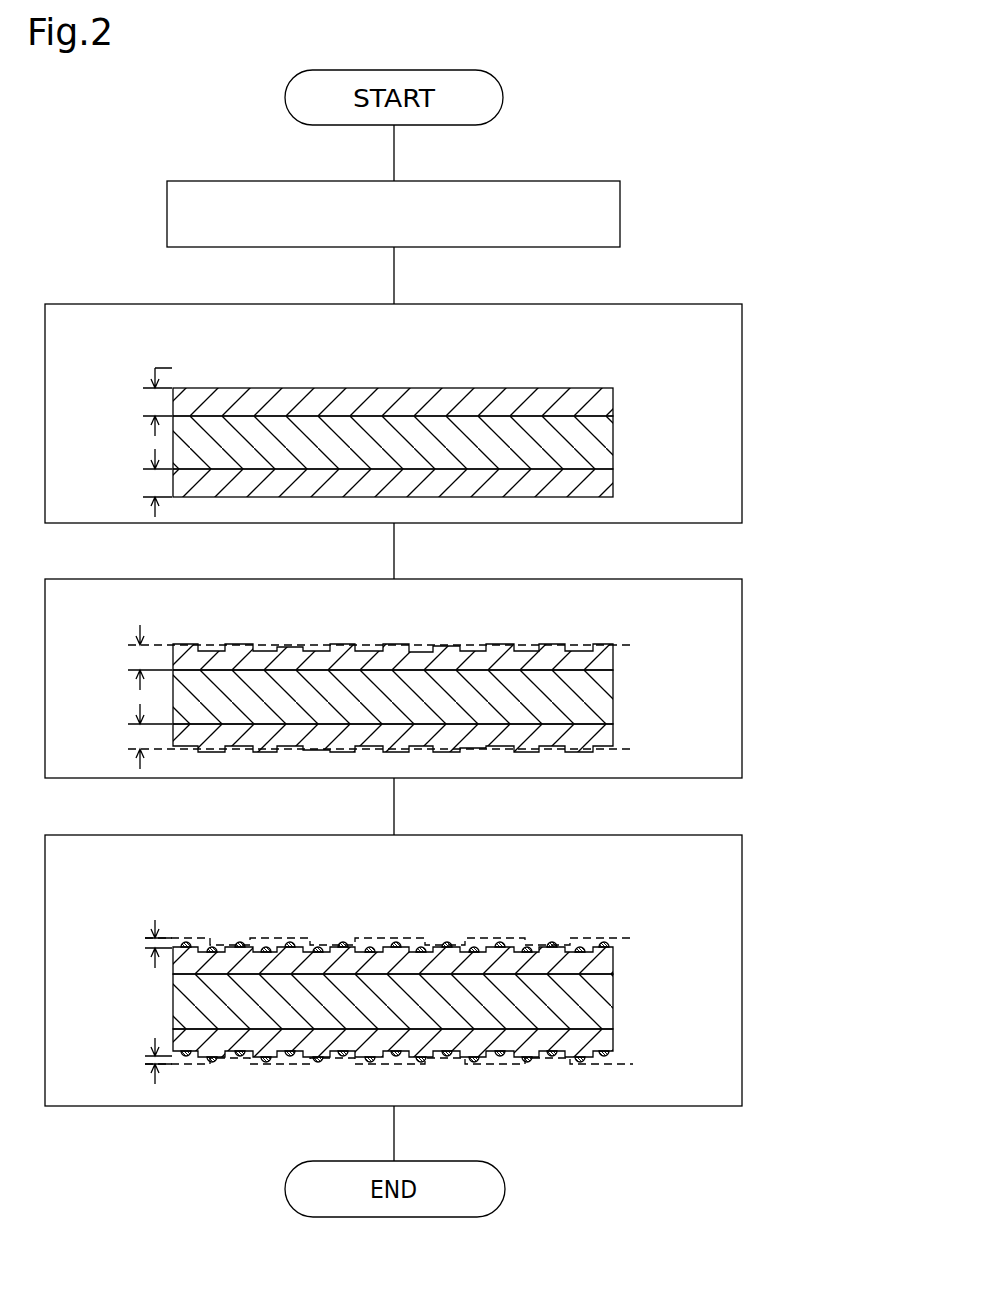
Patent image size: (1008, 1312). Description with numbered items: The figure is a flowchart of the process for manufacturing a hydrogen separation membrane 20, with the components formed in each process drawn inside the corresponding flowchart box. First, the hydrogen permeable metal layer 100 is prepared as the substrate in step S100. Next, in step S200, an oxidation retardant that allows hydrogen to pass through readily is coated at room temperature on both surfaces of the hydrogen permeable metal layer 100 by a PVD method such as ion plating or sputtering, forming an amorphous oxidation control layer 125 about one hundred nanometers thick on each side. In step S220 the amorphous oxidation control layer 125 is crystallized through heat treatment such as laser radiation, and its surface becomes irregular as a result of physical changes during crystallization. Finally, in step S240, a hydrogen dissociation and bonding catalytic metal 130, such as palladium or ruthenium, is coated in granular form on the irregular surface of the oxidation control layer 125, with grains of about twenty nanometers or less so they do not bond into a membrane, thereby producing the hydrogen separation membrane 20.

The hydrogen separation membrane 20 is at (641, 915).
The hydrogen permeable metal layer 100 is at (613, 442).
The oxidation control layer 125 is at (613, 400).
The hydrogen dissociation and bonding catalytic metal 130 is at (615, 943).
The step S100 is at (620, 214).
The step S200 is at (742, 424).
The step S220 is at (742, 676).
The step S240 is at (742, 947).